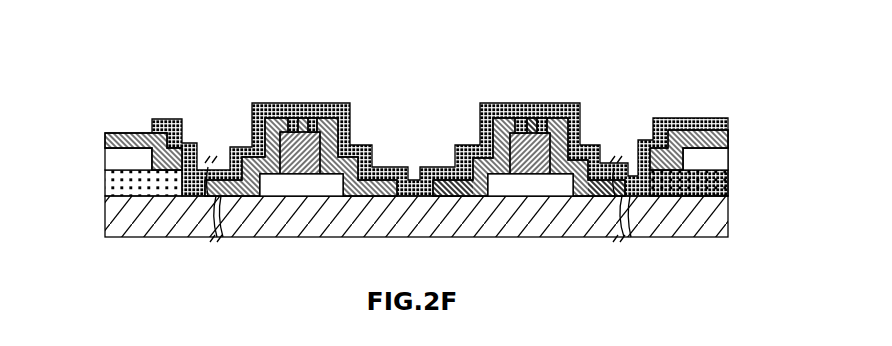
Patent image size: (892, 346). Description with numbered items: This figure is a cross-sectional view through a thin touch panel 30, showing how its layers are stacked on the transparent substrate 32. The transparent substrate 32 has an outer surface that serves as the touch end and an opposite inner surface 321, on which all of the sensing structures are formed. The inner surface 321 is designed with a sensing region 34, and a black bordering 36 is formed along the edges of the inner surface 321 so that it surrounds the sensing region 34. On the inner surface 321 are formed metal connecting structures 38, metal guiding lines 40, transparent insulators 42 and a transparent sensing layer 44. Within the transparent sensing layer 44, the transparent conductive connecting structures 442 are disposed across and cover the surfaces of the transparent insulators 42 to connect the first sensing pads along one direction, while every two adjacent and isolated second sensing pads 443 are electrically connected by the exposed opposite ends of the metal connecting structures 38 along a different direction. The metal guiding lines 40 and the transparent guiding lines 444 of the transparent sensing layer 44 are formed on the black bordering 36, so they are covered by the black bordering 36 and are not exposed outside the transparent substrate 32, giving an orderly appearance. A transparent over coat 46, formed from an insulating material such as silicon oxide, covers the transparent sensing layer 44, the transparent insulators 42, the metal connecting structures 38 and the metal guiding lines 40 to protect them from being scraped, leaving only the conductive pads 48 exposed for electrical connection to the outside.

The thin touch panel 30 is at (421, 161).
The transparent substrate 32 is at (723, 218).
The sensing region 34 is at (481, 196).
The black bordering 36 is at (723, 180).
The metal connecting structures 38 is at (550, 196).
The metal guiding lines 40 is at (723, 158).
The transparent insulators 42 is at (572, 120).
The transparent sensing layer 44 is at (343, 123).
The transparent over coat 46 is at (282, 112).
The conductive pads 48 is at (137, 135).
The inner surface 321 is at (633, 197).
The transparent conductive connecting structures 442 is at (532, 121).
The second sensing pads 443 is at (442, 196).
The transparent guiding lines 444 is at (723, 138).